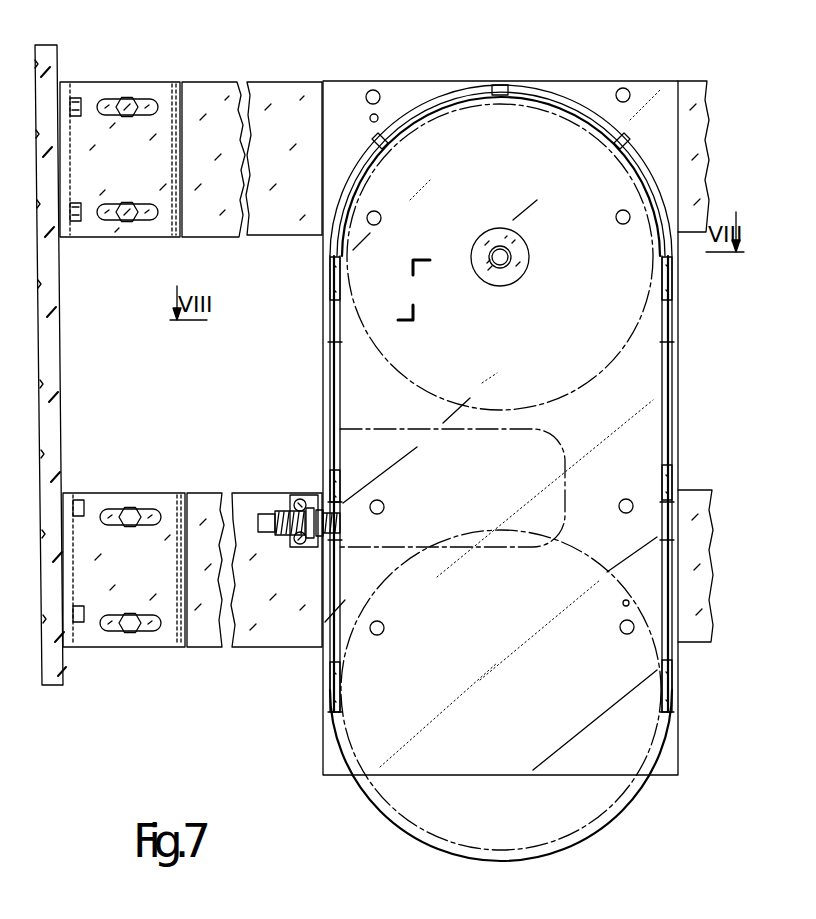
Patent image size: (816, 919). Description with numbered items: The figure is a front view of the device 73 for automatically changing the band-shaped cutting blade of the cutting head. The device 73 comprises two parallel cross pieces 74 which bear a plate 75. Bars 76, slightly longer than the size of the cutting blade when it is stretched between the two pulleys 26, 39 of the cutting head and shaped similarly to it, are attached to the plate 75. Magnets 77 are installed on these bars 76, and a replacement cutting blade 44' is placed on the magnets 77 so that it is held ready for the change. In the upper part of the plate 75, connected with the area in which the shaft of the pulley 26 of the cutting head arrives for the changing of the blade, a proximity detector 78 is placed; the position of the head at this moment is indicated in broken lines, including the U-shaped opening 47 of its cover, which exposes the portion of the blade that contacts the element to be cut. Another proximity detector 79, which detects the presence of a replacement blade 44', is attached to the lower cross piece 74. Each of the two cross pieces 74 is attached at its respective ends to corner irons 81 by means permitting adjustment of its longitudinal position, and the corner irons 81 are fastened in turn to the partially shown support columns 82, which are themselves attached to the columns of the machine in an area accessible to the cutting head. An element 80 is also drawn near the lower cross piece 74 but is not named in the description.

The device for automatically changing the cutting blade 73 is at (500, 435).
The plate 75 is at (578, 97).
The bars 76 is at (660, 190).
The magnets 77 is at (380, 130).
The proximity detector 78 is at (500, 265).
The pulley 26 is at (348, 371).
The replacement cutting blade 44' is at (487, 695).
The U-shaped opening 47 is at (378, 452).
The proximity detector 79 is at (292, 532).
The bracket 80 is at (332, 546).
The corner irons 81 is at (170, 212).
The cross pieces 74 is at (210, 212).
The support columns 82 is at (52, 468).
The pulley 39 is at (325, 625).